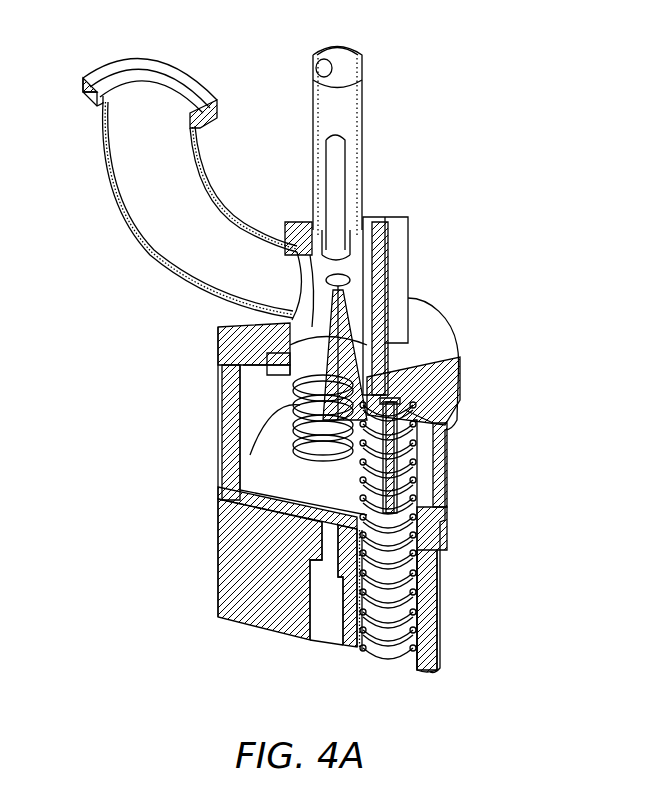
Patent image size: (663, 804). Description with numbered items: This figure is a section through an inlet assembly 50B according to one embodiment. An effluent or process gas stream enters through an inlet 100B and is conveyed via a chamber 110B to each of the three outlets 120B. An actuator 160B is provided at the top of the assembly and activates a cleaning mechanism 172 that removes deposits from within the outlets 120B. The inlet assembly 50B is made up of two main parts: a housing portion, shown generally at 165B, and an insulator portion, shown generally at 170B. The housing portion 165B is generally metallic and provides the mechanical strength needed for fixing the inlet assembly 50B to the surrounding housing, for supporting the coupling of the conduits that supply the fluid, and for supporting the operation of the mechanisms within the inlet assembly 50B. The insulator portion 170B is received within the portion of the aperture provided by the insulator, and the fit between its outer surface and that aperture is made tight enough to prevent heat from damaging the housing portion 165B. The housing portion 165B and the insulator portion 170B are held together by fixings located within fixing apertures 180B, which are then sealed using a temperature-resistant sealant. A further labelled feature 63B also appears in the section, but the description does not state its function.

The inlet assembly 50B is at (104, 340).
The inlet 100B is at (132, 82).
The actuator 160B is at (368, 112).
The housing portion 165B is at (510, 85).
The chamber 110B is at (236, 417).
The separator plate 63B is at (223, 484).
The insulator portion 170B is at (510, 552).
The cleaning mechanism 172 is at (438, 585).
The fixing apertures 180B is at (330, 623).
The outlets 120B is at (388, 650).